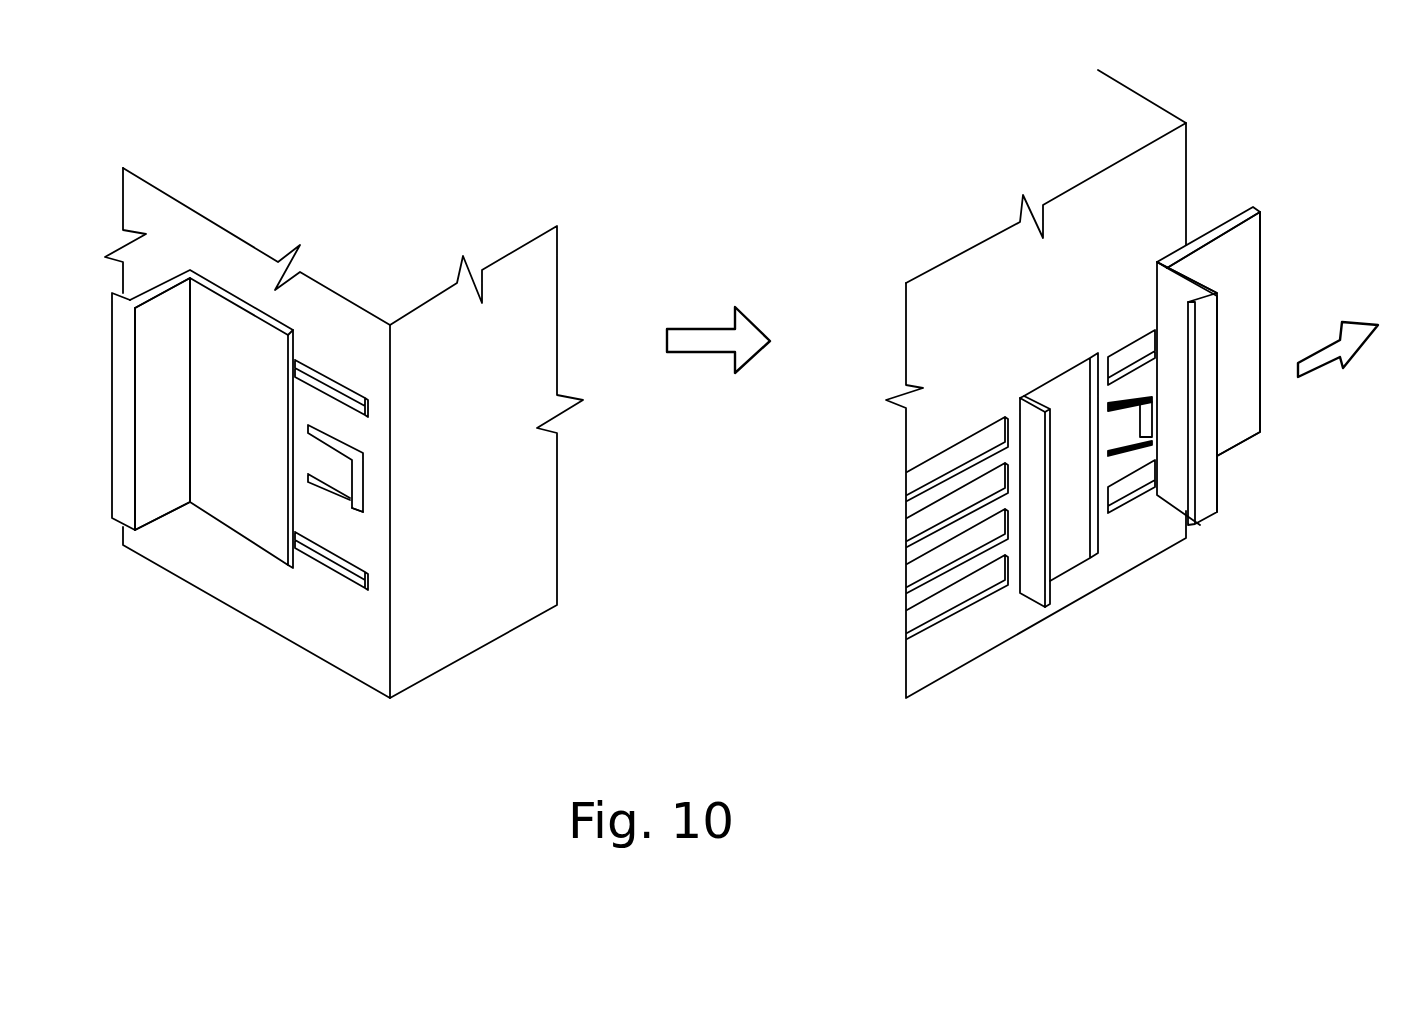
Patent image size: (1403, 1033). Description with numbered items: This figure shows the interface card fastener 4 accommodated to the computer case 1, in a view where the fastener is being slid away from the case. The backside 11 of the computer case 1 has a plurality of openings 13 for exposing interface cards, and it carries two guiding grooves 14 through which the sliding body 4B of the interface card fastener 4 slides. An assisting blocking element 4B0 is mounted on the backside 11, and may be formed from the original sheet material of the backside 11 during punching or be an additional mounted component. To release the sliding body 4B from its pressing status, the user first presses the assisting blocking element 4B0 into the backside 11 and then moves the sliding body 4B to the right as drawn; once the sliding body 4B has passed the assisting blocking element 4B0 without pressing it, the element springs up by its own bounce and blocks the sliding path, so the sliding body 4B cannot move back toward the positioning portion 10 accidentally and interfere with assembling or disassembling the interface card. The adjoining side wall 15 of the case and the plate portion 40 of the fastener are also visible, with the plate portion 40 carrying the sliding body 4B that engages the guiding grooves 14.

The computer case 1 is at (318, 163).
The interface card fastener 4 is at (165, 401).
The sliding body 4B is at (245, 513).
The assisting blocking element 4B0 is at (342, 473).
The positioning portion 10 is at (1030, 590).
The backside 11 is at (272, 612).
The openings 13 is at (965, 428).
The guiding grooves 14 is at (367, 412).
The side wall 15 is at (479, 506).
The plate portion of bracket 40 is at (1172, 415).